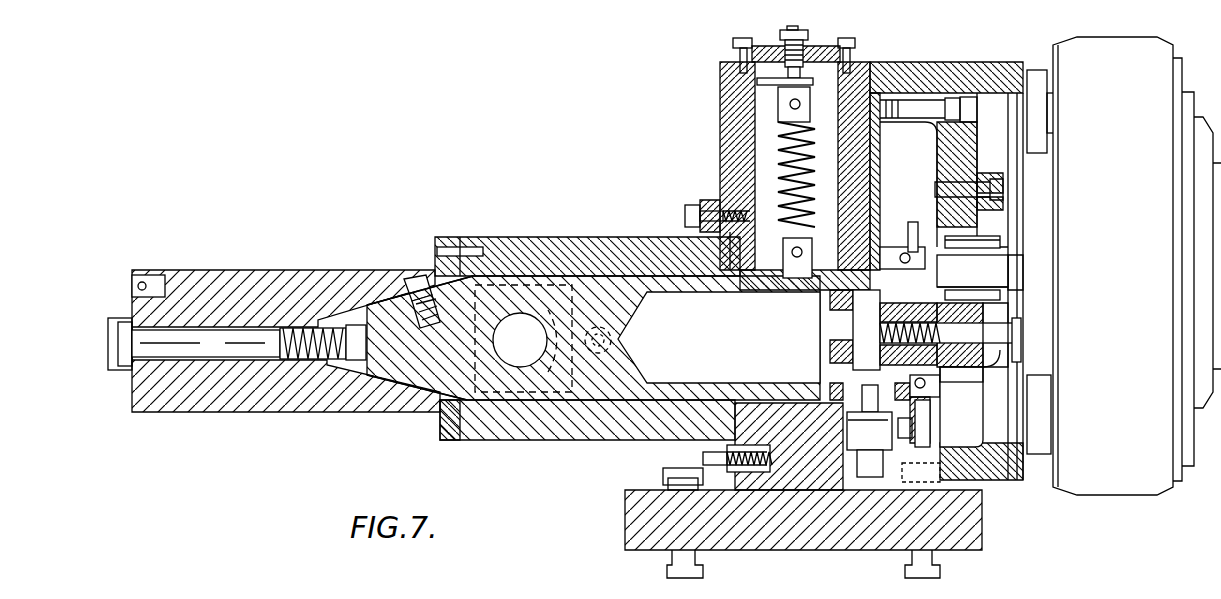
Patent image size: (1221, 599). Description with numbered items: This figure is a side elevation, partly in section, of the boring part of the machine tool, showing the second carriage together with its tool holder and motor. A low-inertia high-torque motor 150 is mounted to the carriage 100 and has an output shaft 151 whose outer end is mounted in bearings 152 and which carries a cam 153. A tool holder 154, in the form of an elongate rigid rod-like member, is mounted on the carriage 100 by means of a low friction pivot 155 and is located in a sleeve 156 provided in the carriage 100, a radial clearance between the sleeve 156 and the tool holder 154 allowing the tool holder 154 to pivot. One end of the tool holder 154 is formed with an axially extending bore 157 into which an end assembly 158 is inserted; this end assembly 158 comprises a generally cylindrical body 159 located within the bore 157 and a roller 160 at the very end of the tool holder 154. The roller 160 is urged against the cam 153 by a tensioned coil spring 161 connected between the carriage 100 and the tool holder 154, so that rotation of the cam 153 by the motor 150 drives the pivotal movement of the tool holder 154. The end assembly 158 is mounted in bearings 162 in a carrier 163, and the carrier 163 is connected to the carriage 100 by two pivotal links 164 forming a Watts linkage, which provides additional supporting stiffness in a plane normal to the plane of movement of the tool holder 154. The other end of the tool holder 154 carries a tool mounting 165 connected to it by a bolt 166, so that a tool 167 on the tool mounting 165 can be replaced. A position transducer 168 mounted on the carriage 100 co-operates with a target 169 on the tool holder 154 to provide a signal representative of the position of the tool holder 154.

The carriage 100 is at (942, 70).
The motor 150 is at (1060, 60).
The output shaft 151 is at (1012, 271).
The bearings 152 is at (1010, 262).
The cam 153 is at (1010, 306).
The tool holder 154 is at (598, 292).
The low friction pivot 155 is at (528, 360).
The sleeve 156 is at (519, 276).
The bore 157 is at (668, 294).
The end assembly 158 is at (812, 344).
The cylindrical body 159 is at (962, 372).
The roller 160 is at (985, 354).
The coil spring 161 is at (778, 160).
The bearings 162 is at (905, 246).
The carrier 163 is at (930, 272).
The pivotal links 164 is at (918, 228).
The tool mounting 165 is at (222, 292).
The bolt 166 is at (232, 335).
The tool 167 is at (132, 276).
The position transducer 168 is at (870, 470).
The target 169 is at (830, 388).